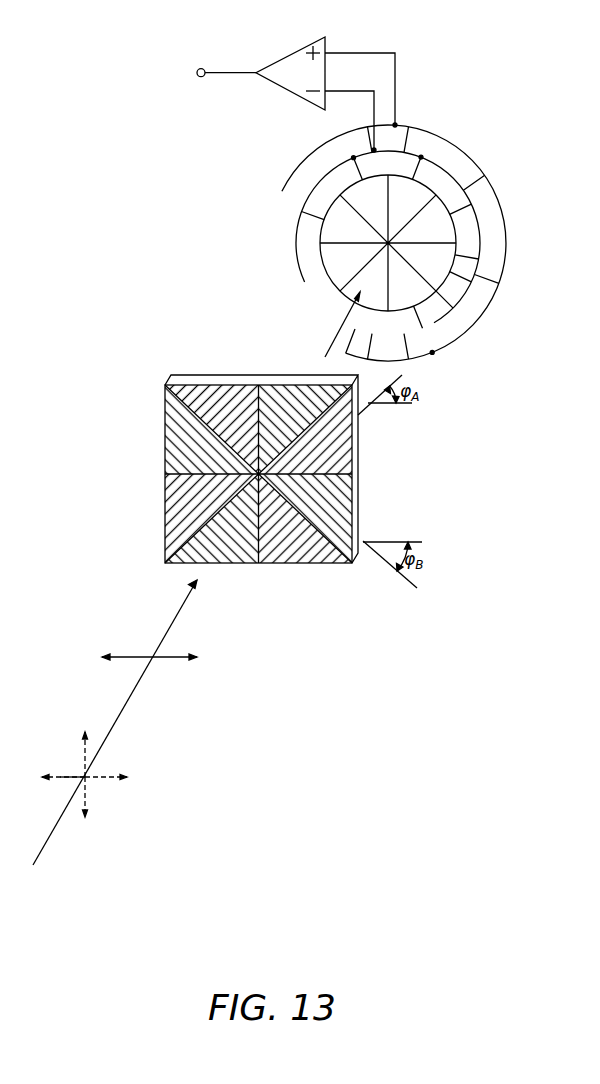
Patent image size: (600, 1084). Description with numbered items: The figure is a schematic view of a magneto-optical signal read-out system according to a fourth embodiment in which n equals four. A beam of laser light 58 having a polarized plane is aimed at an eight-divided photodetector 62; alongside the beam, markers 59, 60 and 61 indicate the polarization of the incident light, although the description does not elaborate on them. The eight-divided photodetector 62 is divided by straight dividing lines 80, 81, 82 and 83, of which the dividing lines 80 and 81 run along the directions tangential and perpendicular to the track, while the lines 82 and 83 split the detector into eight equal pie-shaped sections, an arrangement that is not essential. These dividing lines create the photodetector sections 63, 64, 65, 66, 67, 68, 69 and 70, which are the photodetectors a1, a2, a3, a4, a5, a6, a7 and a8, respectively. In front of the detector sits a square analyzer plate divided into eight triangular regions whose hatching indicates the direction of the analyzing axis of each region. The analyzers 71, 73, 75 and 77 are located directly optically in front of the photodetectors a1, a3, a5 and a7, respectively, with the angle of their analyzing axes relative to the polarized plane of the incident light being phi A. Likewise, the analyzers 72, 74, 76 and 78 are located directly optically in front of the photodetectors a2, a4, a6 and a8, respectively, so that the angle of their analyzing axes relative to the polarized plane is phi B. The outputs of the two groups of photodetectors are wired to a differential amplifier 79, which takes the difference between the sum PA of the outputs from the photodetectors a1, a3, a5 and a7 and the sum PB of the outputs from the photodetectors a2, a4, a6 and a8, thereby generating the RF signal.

The beam of laser light 58 is at (125, 712).
The polarization direction 59 is at (200, 660).
The polarization component 60 is at (130, 778).
The polarization component 61 is at (88, 818).
The 8-divided photodetector 62 is at (440, 300).
The photodetector section 63 is at (366, 192).
The photodetector section 64 is at (346, 223).
The photodetector section 65 is at (346, 265).
The photodetector section 66 is at (375, 295).
The photodetector section 67 is at (408, 291).
The photodetector section 68 is at (431, 263).
The photodetector section 69 is at (434, 227).
The photodetector section 70 is at (409, 189).
The analyzer 71 is at (208, 403).
The analyzer 72 is at (183, 447).
The analyzer 73 is at (175, 513).
The analyzer 74 is at (238, 553).
The analyzer 75 is at (313, 553).
The analyzer 76 is at (340, 502).
The analyzer 77 is at (336, 447).
The analyzer 78 is at (283, 400).
The differential amplifier 79 is at (283, 83).
The dividing line 80 is at (322, 247).
The dividing line 81 is at (388, 312).
The dividing line 82 is at (482, 184).
The dividing line 83 is at (440, 287).
The photodetector a1 is at (380, 174).
The photodetector a2 is at (326, 222).
The photodetector a3 is at (333, 276).
The photodetector a4 is at (348, 297).
The photodetector a5 is at (427, 343).
The photodetector a6 is at (453, 247).
The photodetector a7 is at (453, 235).
The photodetector a8 is at (443, 172).